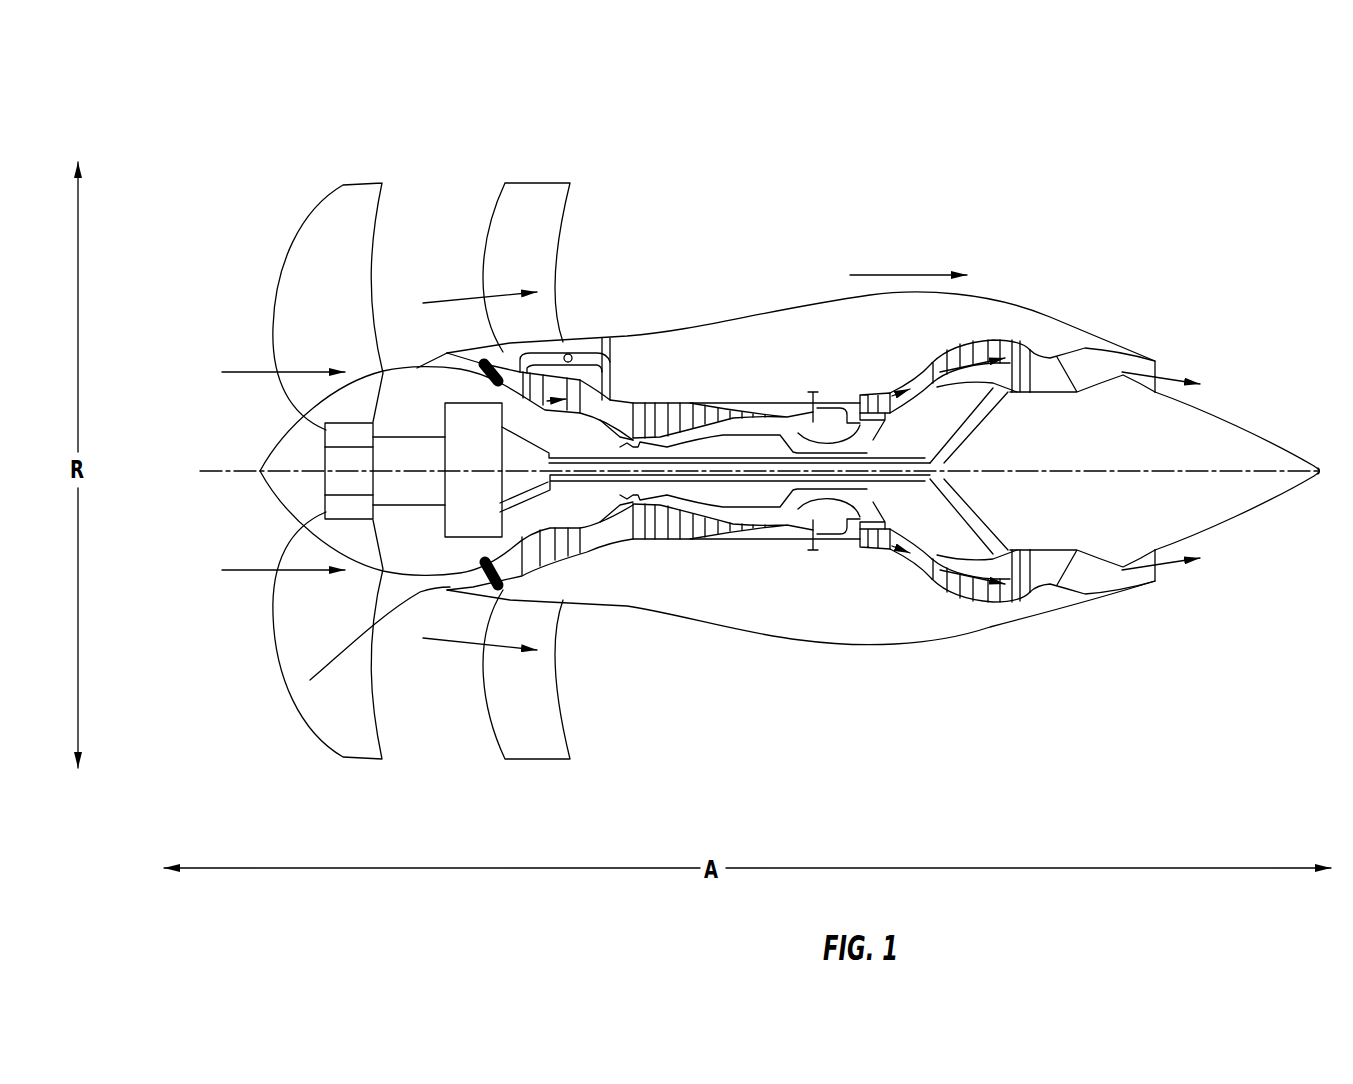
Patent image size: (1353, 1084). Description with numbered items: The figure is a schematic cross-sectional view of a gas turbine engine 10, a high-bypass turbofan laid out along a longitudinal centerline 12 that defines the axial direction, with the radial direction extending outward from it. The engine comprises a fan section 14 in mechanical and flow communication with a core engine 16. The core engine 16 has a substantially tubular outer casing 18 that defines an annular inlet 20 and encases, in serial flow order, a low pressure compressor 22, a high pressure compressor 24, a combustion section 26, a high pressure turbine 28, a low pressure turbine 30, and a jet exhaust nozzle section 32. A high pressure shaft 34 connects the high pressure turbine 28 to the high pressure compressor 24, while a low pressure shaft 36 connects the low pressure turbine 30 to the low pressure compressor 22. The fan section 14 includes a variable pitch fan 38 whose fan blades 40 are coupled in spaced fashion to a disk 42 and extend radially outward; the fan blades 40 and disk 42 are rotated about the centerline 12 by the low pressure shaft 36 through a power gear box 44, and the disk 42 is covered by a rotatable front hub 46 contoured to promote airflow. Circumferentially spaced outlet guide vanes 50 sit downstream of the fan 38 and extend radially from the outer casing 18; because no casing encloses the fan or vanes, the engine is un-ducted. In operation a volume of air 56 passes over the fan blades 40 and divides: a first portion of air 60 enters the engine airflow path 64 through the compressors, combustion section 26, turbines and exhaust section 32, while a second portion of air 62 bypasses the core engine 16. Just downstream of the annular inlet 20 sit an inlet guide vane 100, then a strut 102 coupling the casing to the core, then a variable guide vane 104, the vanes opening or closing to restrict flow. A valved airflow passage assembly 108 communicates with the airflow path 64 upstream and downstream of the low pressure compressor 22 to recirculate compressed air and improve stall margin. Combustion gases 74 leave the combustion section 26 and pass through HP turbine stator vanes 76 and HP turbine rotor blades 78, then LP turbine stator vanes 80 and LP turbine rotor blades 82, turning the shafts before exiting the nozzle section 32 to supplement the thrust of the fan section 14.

The gas turbine engine 10 is at (1072, 215).
The longitudinal centerline 12 is at (1097, 470).
The fan section 14 is at (410, 90).
The core engine 16 is at (777, 306).
The outer casing 18 is at (790, 639).
The annular inlet 20 is at (307, 680).
The low pressure compressor 22 is at (556, 552).
The high pressure compressor 24 is at (650, 520).
The combustion section 26 is at (832, 537).
The high pressure turbine 28 is at (933, 542).
The low pressure turbine 30 is at (1017, 600).
The jet exhaust nozzle section 32 is at (1073, 582).
The high pressure shaft 34 is at (867, 443).
The low pressure shaft 36 is at (563, 458).
The variable pitch fan 38 is at (250, 330).
The fan blades 40 is at (310, 680).
The disk 42 is at (347, 438).
The power gear box 44 is at (462, 423).
The rotatable front hub 46 is at (295, 503).
The outlet guide vanes 50 is at (530, 215).
The volume of air 56 is at (307, 373).
The first portion of air 60 is at (513, 370).
The second portion of air 62 is at (463, 297).
The engine airflow path 64 is at (668, 535).
The combustion gases 74 is at (977, 341).
The HP turbine stator vanes 76 is at (840, 535).
The HP turbine rotor blades 78 is at (883, 510).
The LP turbine stator vanes 80 is at (940, 578).
The LP turbine rotor blades 82 is at (950, 583).
The inlet guide vane 100 is at (455, 590).
The strut 102 is at (497, 590).
The variable guide vane 104 is at (527, 576).
The valved airflow passage assembly 108 is at (583, 352).